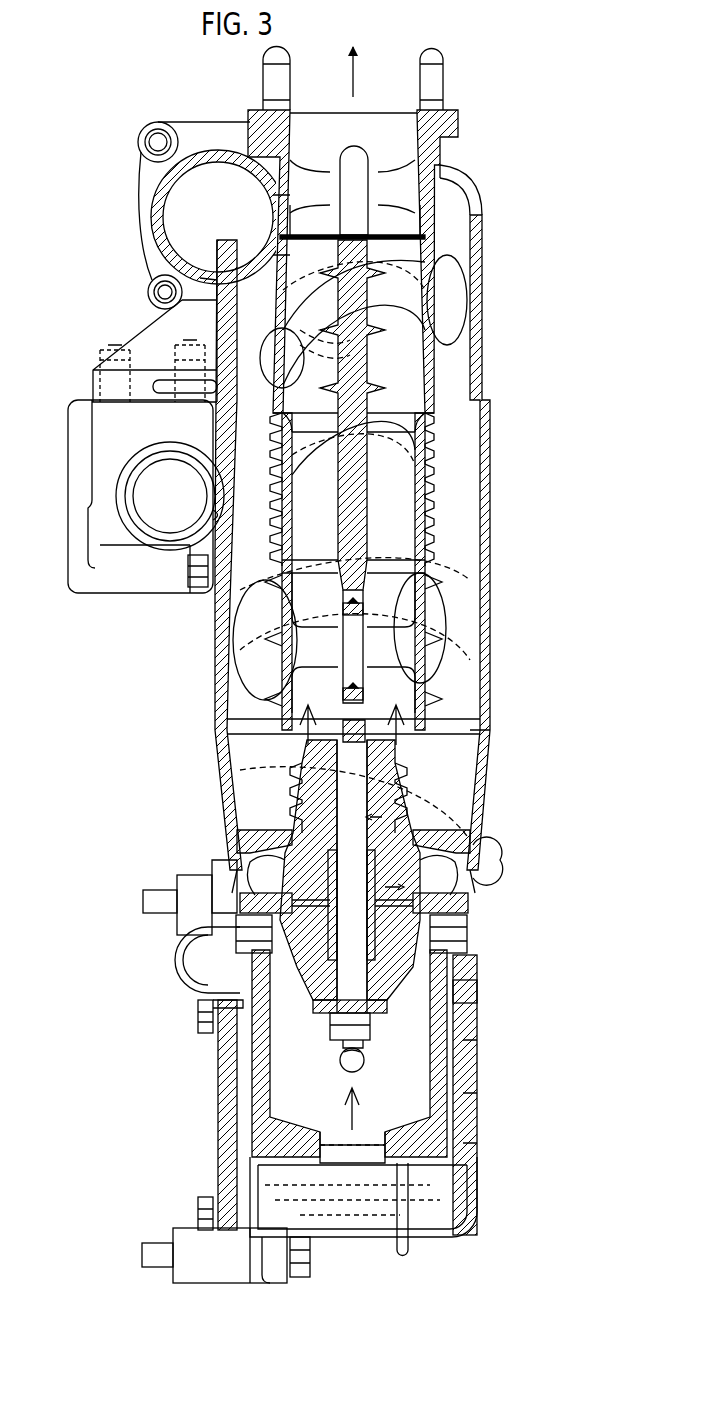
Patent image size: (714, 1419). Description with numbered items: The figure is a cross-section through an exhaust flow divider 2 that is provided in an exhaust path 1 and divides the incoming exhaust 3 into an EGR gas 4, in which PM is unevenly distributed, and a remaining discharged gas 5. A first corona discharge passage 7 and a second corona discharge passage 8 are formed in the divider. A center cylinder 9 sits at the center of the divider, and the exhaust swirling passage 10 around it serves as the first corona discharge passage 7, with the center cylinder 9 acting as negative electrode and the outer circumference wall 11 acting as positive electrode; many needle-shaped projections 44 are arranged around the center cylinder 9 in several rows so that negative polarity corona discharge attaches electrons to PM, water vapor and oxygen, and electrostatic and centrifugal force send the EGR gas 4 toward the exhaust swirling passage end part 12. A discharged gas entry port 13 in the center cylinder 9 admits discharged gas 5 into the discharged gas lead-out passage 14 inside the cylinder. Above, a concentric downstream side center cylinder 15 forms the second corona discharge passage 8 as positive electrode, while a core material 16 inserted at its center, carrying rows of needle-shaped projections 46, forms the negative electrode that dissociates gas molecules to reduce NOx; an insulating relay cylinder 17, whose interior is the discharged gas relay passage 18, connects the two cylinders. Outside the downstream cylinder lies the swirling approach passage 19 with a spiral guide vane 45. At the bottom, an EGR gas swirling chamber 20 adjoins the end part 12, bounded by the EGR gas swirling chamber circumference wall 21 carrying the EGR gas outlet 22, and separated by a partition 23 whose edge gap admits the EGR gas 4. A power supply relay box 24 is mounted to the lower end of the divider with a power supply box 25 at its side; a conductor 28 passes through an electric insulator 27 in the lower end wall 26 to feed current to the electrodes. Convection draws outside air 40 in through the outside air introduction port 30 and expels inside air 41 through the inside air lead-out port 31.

The exhaust path 1 is at (210, 108).
The exhaust flow divider 2 is at (138, 182).
The exhaust 3 is at (290, 217).
The EGR gas 4 is at (462, 775).
The discharged gas 5 is at (353, 90).
The first corona discharge passage 7 is at (240, 660).
The second corona discharge passage 8 is at (262, 398).
The center cylinder 9 is at (265, 600).
The exhaust swirling passage 10 is at (165, 733).
The outer circumference wall 11 is at (225, 655).
The exhaust swirling passage end part 12 is at (268, 795).
The discharged gas entry port 13 is at (435, 690).
The discharged gas lead-out passage 14 is at (400, 605).
The downstream side center cylinder 15 is at (433, 348).
The core material 16 is at (261, 565).
The relay cylinder 17 is at (430, 478).
The discharged gas relay passage 18 is at (400, 535).
The swirling approach passage 19 is at (455, 247).
The EGR gas swirling chamber 20 is at (480, 862).
The EGR gas swirling chamber circumference wall 21 is at (470, 870).
The EGR gas outlet 22 is at (455, 905).
The partition 23 is at (455, 820).
The power supply relay box 24 is at (220, 1105).
The power supply box 25 is at (455, 1160).
The lower end wall 26 is at (465, 925).
The electric insulator 27 is at (373, 1008).
The conductor 28 is at (327, 1013).
The outside air introduction port 30 is at (362, 1140).
The inside air lead-out port 31 is at (213, 950).
The outside air 40 is at (343, 1125).
The inside air 41 is at (177, 927).
The needle-shaped projections 44 is at (430, 580).
The spiral guide vane 45 is at (270, 290).
The needle-shaped projections 46 is at (398, 322).